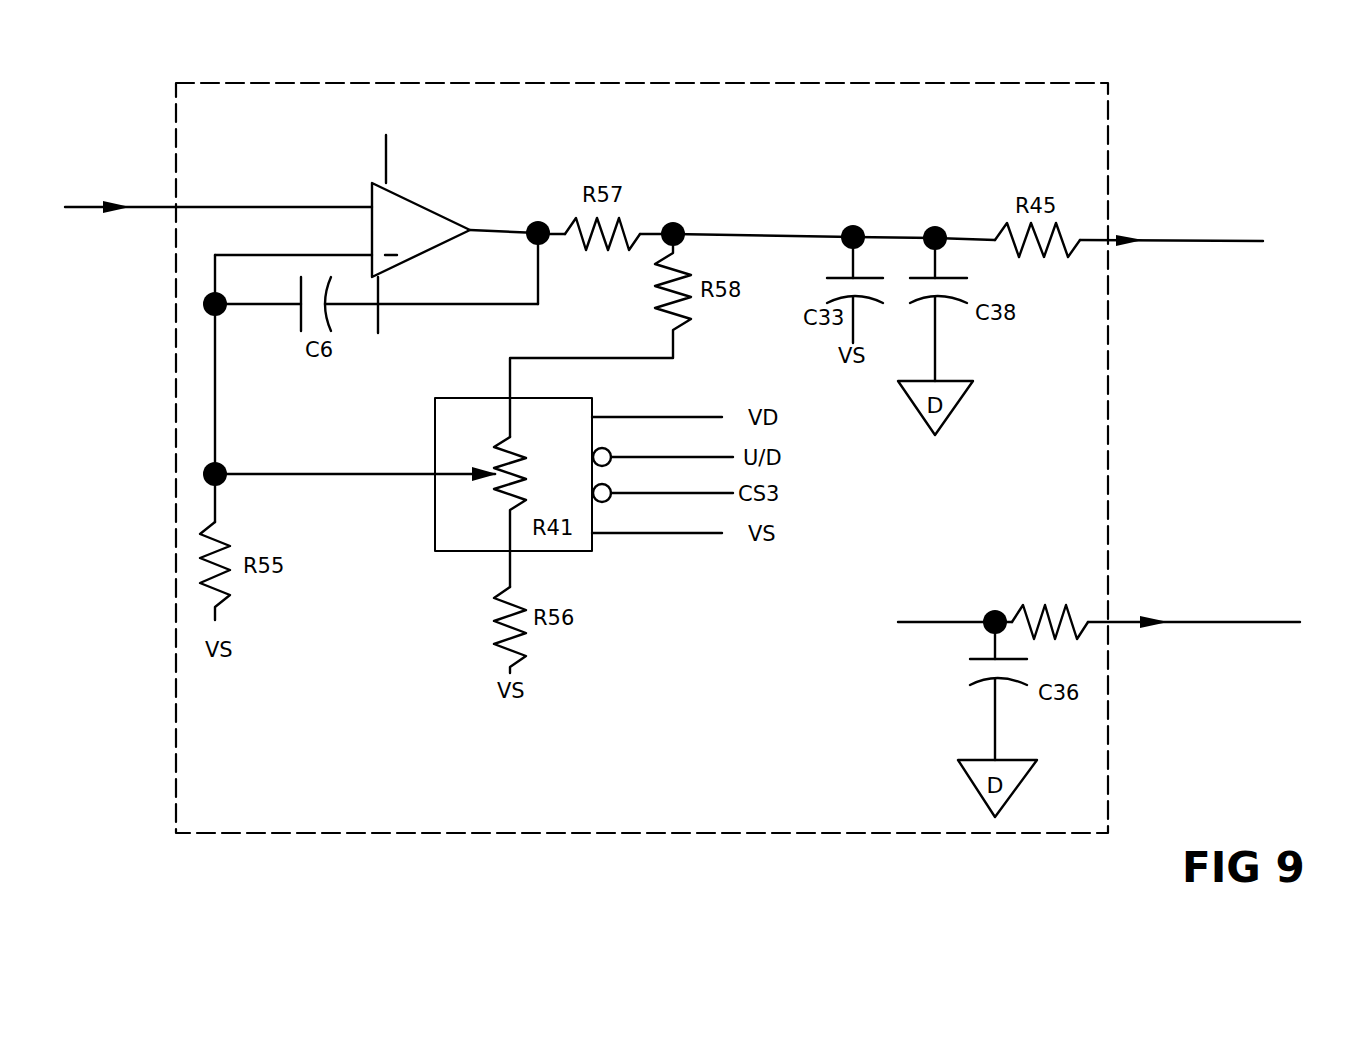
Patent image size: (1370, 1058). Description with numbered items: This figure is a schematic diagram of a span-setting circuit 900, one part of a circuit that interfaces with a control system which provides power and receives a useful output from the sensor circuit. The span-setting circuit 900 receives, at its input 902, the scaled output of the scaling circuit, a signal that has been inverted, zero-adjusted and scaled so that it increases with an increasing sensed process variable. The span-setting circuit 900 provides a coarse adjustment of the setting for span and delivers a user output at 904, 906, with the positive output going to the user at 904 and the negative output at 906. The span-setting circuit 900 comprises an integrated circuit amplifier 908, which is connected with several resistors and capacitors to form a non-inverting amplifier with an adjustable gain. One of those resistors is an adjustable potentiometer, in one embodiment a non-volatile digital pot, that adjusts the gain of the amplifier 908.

The span-setting circuit 900 is at (1108, 752).
The input signal from FIG. 8 902 is at (176, 207).
The user output 904 is at (1208, 241).
The user output 906 is at (1175, 622).
The integrated circuit amplifier 908 is at (417, 191).